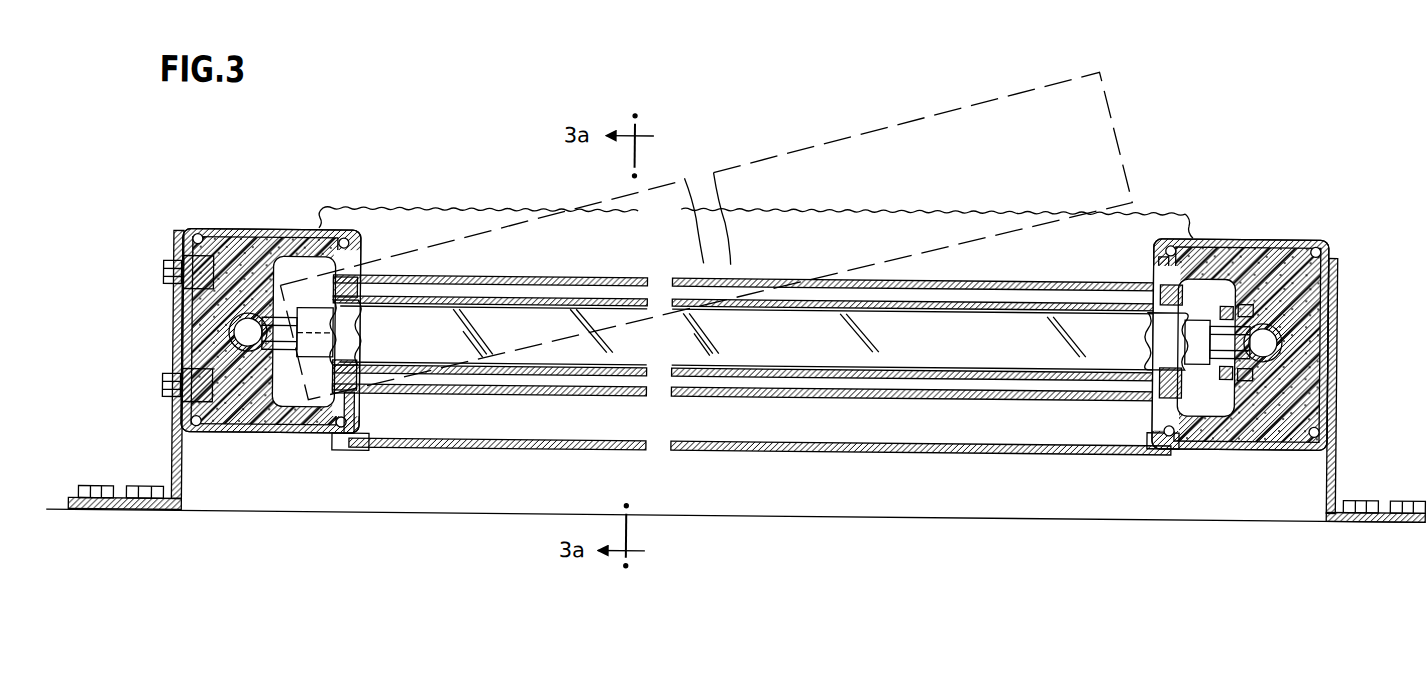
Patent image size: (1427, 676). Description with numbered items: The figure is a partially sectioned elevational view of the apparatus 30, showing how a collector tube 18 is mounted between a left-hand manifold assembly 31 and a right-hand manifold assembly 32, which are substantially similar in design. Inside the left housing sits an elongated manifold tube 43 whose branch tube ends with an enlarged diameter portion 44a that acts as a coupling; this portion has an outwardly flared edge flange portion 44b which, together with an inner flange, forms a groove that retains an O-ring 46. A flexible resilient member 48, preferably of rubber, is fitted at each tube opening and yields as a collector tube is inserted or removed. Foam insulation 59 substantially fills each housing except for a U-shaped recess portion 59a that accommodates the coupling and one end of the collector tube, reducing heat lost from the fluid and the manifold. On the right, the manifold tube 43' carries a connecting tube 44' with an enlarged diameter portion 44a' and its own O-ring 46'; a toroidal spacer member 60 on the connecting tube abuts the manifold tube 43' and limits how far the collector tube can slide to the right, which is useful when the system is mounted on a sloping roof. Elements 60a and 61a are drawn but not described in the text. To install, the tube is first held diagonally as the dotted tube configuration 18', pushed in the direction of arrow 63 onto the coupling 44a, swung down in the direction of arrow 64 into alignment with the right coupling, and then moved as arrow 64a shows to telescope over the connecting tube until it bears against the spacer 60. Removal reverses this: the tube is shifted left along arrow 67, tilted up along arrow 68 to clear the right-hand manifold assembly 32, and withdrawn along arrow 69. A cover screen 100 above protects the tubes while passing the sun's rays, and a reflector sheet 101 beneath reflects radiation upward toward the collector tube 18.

The collector tube 18 is at (757, 313).
The dotted tube configuration 18' is at (706, 235).
The apparatus 30 is at (502, 168).
The left-hand manifold assembly 31 is at (275, 172).
The right-hand manifold assembly 32 is at (1228, 180).
The manifold tube 43 is at (189, 331).
The manifold tube 43' is at (1318, 341).
The enlarged diameter portion 44a is at (288, 270).
The enlarged diameter portion of connecting tube 44a' is at (1216, 410).
The outwardly flared edge flange portion 44b is at (360, 357).
The connecting tube 44' is at (1316, 351).
The O-ring 46 is at (381, 333).
The O-ring 46' is at (1140, 341).
The flexible resilient member 48 is at (350, 418).
The foam insulation 59 is at (238, 430).
The U-shaped recess portion 59a is at (288, 420).
The spacer member 60 is at (1232, 251).
The right housing cavity 60a is at (1237, 421).
The bearing retainer 61a is at (1322, 299).
The arrow 63 is at (1010, 246).
The arrow 64 is at (974, 194).
The arrow 64a is at (1032, 321).
The arrow 67 is at (1030, 412).
The arrow 68 is at (1128, 234).
The arrow 69 is at (958, 67).
The cover screen 100 is at (350, 205).
The reflector sheet 101 is at (802, 446).